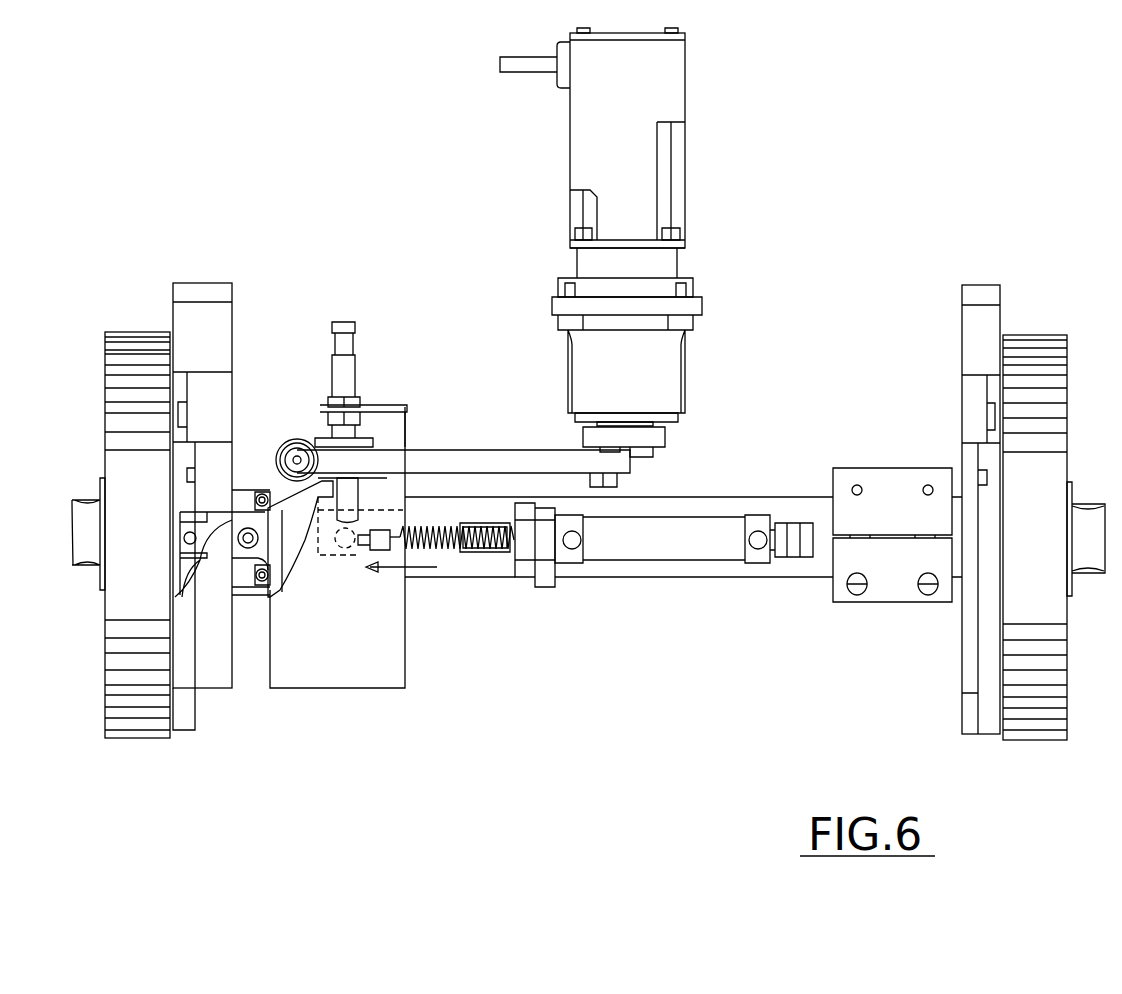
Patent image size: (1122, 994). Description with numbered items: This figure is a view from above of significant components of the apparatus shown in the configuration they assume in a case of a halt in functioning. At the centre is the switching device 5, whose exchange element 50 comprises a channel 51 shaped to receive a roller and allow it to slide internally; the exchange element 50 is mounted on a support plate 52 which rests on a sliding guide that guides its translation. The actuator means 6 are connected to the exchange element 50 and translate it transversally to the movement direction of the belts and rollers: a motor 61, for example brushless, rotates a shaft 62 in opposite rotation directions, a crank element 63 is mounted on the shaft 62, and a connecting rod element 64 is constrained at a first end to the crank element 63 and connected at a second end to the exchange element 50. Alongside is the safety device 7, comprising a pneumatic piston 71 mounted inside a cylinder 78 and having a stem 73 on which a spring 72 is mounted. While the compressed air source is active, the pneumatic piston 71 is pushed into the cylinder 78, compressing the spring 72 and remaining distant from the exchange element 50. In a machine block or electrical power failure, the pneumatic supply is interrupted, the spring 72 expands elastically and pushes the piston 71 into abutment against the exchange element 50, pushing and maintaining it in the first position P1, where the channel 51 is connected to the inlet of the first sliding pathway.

The switching device 5 is at (318, 556).
The exchange element 50 is at (280, 583).
The channel 51 is at (237, 517).
The support plate 52 is at (297, 440).
The actuator means 6 is at (567, 257).
The motor 61 is at (578, 160).
The shaft 62 is at (660, 423).
The crank element 63 is at (660, 442).
The connecting rod element 64 is at (520, 455).
The safety device 7 is at (660, 582).
The pneumatic piston 71 is at (410, 520).
The spring 72 is at (450, 552).
The stem 73 is at (511, 555).
The cylinder 78 is at (607, 565).
The first position P1 is at (152, 575).